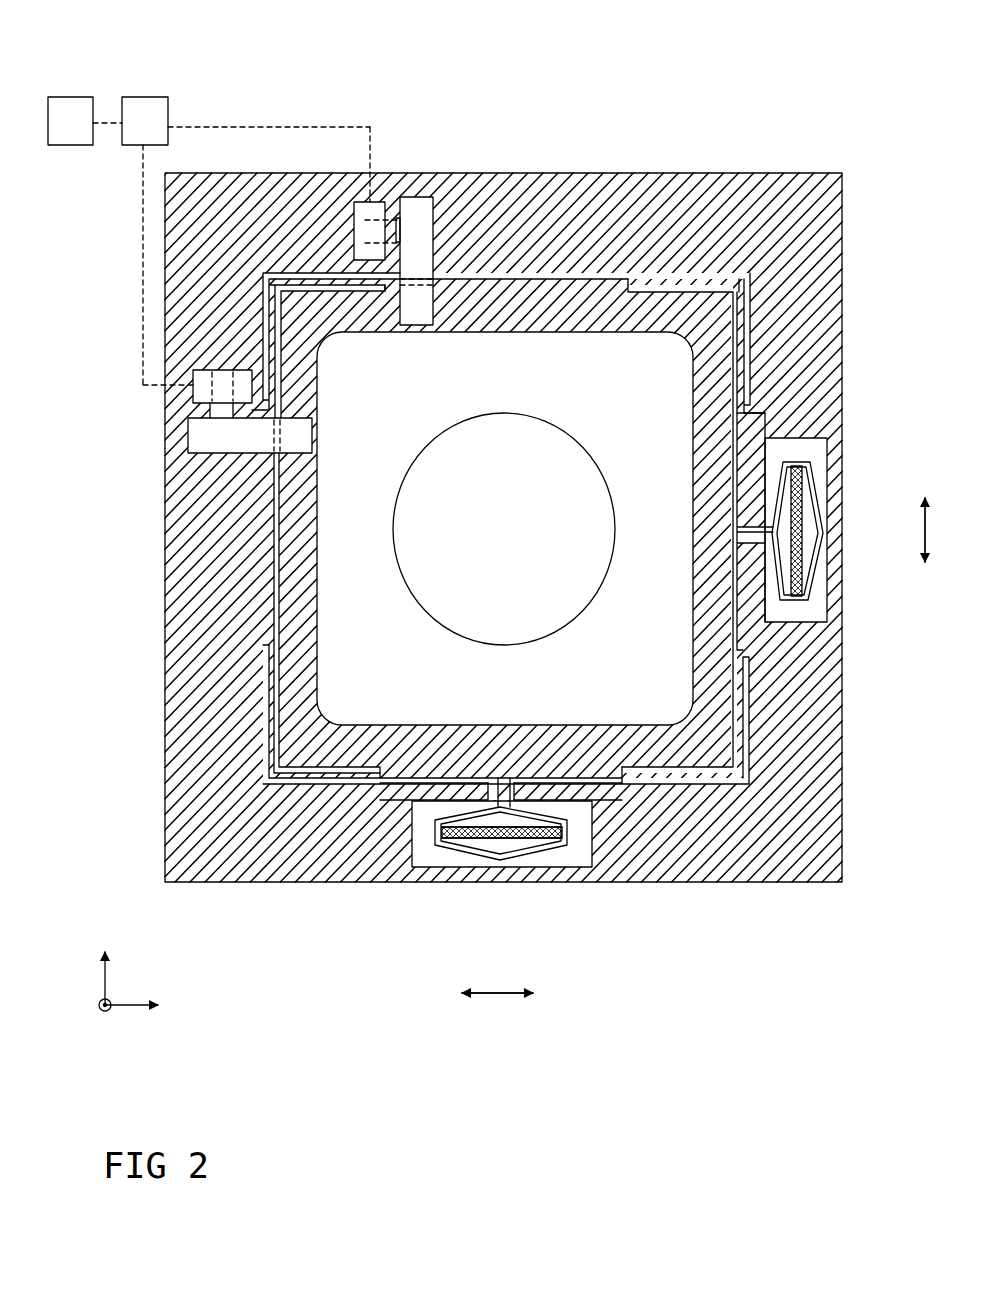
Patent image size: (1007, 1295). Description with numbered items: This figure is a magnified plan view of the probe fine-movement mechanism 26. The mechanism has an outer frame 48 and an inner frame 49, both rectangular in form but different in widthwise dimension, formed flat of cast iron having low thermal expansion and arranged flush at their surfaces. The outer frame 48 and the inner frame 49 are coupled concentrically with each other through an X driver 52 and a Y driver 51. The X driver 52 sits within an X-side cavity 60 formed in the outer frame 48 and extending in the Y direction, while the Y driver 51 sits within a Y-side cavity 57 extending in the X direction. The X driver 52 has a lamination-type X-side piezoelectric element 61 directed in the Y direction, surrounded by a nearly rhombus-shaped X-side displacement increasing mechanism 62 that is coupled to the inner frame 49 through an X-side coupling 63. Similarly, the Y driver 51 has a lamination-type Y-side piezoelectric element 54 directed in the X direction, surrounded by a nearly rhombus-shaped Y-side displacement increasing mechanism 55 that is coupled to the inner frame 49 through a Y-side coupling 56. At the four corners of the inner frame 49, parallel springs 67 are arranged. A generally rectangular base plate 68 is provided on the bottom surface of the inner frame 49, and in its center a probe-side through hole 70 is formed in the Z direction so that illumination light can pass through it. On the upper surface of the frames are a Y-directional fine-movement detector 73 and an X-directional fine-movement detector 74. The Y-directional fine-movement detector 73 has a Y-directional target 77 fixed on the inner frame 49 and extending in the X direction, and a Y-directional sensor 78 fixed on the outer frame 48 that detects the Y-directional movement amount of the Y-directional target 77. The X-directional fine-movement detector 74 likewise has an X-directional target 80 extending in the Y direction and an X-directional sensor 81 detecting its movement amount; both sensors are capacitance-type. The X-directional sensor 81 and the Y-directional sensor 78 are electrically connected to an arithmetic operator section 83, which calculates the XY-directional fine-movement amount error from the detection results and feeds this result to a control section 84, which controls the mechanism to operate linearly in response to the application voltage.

The probe fine-movement mechanism 26 is at (781, 110).
The outer frame 48 is at (805, 884).
The inner frame 49 is at (567, 308).
The Y driver 51 is at (501, 882).
The X driver 52 is at (817, 478).
The Y-side piezoelectric element 54 is at (453, 840).
The Y-side displacement increasing mechanism 55 is at (502, 850).
The Y-side coupling 56 is at (508, 792).
The Y-side cavity 57 is at (420, 853).
The X-side cavity 60 is at (818, 490).
The X-side piezoelectric element 61 is at (804, 562).
The X-side displacement increasing mechanism 62 is at (822, 531).
The X-side coupling 63 is at (755, 450).
The parallel springs 67 is at (676, 281).
The base plate 68 is at (338, 512).
The probe-side through hole 70 is at (399, 534).
The Y-directional fine-movement detector 73 is at (176, 431).
The X-directional fine-movement detector 74 is at (422, 175).
The Y-directional target 77 is at (195, 438).
The Y-directional sensor 78 is at (200, 392).
The X-directional target 80 is at (420, 212).
The X-directional sensor 81 is at (378, 206).
The arithmetic operator section 83 is at (145, 97).
The control section 84 is at (72, 97).